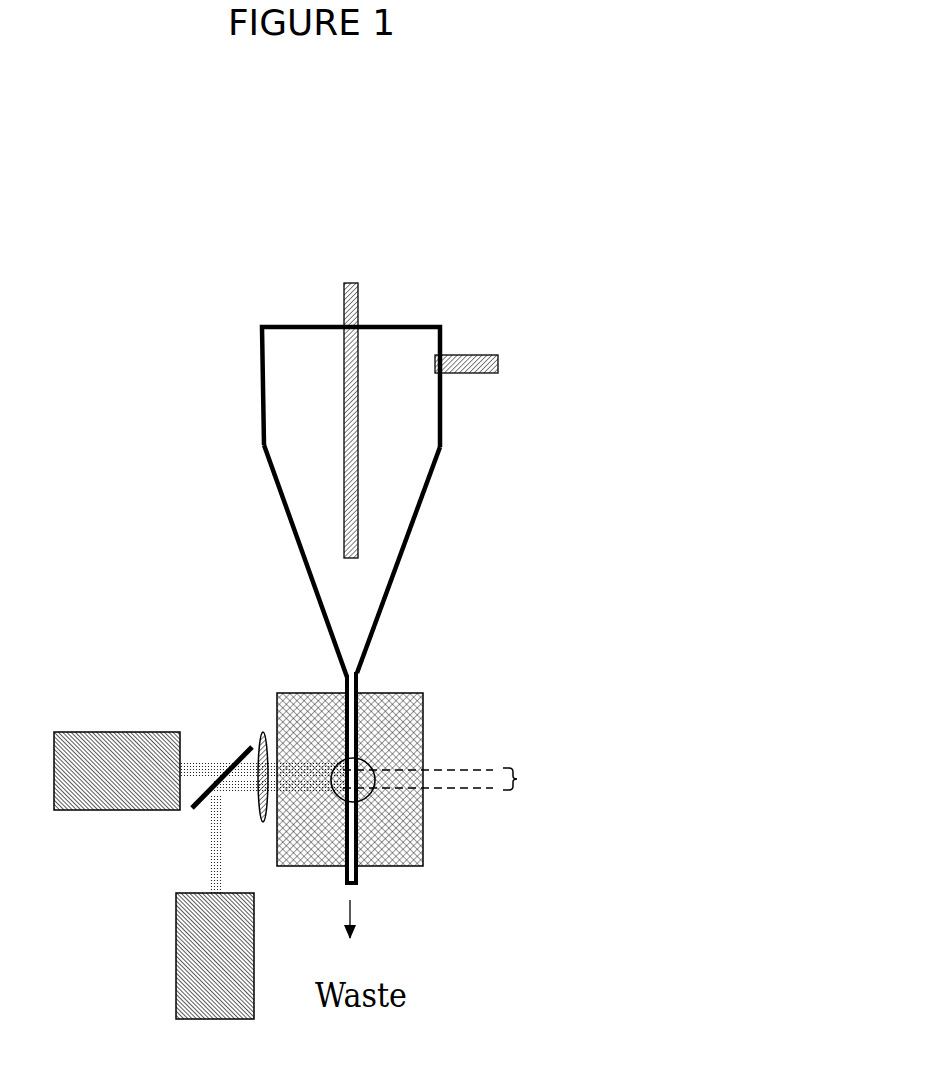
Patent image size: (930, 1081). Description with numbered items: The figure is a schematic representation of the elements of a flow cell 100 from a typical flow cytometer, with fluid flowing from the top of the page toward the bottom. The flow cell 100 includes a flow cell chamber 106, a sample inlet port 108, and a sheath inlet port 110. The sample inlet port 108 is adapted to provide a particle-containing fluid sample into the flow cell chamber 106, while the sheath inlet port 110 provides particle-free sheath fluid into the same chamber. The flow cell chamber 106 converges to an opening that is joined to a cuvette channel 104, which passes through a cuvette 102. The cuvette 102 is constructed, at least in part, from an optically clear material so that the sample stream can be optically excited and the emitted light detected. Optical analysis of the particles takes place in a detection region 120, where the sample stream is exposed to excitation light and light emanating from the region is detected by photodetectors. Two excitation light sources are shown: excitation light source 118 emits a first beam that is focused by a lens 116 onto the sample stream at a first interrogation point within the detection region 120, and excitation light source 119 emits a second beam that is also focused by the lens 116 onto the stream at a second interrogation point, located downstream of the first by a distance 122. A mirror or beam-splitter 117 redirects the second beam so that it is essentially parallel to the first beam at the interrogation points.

The flow cell 100 is at (446, 233).
The cuvette 102 is at (410, 672).
The cuvette channel 104 is at (358, 890).
The flow cell chamber 106 is at (275, 481).
The sample inlet port 108 is at (350, 362).
The sheath inlet port 110 is at (503, 363).
The lens 116 is at (263, 726).
The mirror or beam-splitter 117 is at (219, 734).
The excitation light source 118 is at (114, 724).
The excitation light source 119 is at (170, 956).
The detection region 120 is at (368, 802).
The distance 122 is at (523, 779).